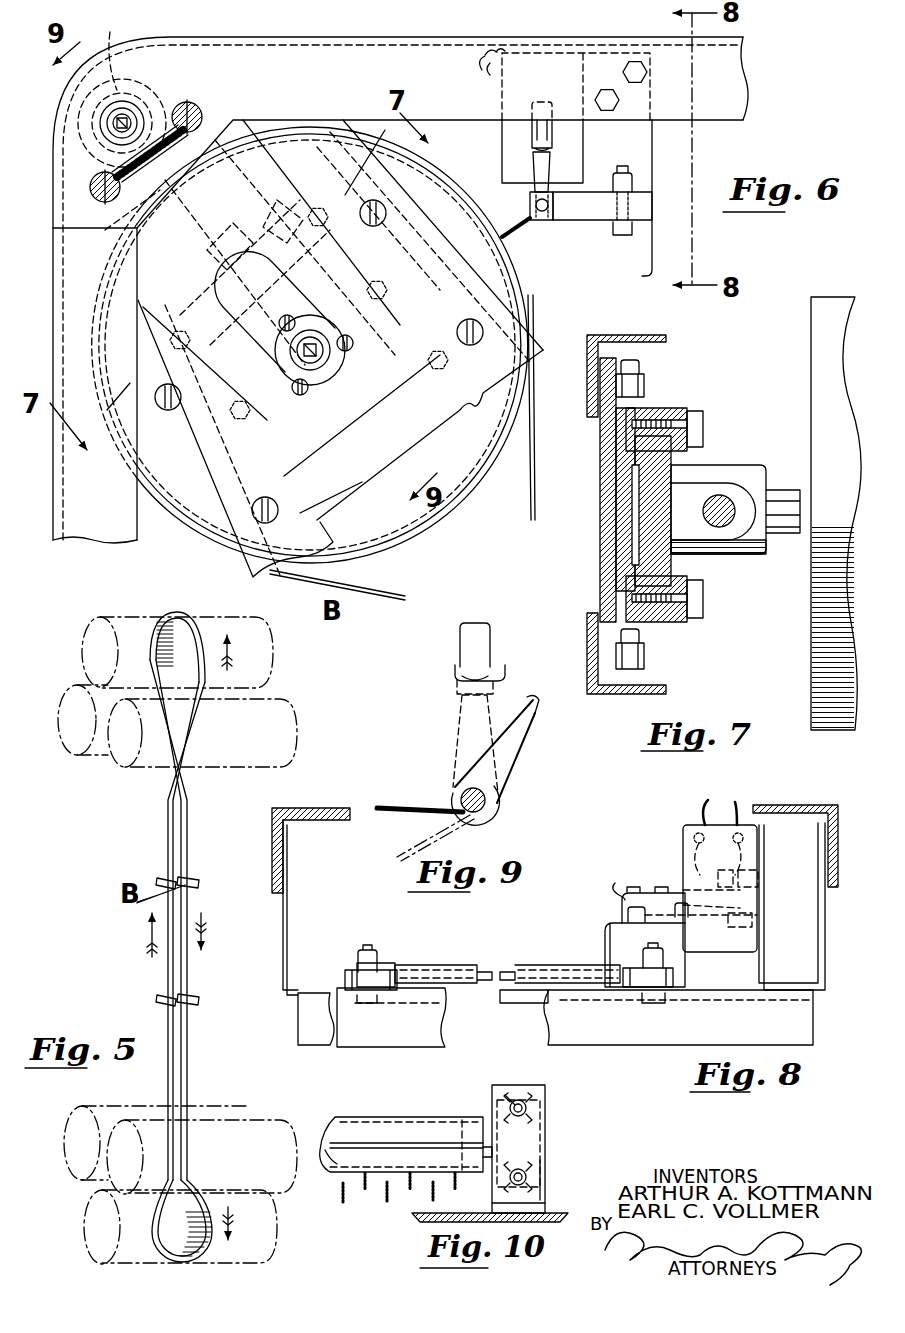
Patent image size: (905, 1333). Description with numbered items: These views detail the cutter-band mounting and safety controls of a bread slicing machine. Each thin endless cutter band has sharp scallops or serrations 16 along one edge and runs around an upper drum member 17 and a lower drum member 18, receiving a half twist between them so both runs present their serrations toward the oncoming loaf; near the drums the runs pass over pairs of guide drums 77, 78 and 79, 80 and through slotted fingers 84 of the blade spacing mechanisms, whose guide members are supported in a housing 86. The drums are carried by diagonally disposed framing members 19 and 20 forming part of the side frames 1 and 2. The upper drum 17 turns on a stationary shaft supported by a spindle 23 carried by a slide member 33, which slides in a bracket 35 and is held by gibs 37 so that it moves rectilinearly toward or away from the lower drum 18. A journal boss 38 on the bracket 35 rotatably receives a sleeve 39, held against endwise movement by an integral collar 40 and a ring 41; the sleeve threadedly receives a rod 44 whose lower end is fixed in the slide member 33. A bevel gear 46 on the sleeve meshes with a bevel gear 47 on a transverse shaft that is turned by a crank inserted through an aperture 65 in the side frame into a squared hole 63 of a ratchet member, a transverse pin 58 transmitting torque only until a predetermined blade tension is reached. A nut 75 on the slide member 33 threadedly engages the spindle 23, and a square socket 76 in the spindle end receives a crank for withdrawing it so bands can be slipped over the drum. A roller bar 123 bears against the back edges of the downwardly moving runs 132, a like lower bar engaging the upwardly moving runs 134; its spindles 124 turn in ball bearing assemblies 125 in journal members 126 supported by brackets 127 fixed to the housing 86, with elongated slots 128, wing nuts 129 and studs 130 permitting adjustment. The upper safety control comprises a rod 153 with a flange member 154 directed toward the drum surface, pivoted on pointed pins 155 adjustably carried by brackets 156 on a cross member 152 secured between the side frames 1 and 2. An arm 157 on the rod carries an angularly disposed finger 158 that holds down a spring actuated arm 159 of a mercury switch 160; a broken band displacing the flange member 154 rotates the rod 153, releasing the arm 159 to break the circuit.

In FIG. 6, the side frame 1 is at (392, 37).
In FIG. 8, the side frame 1 is at (322, 808).
In FIG. 8, the side frame 2 is at (840, 857).
In FIG. 5, the scallops or serrations 16 is at (188, 826).
In FIG. 6, the upper drum member 17 is at (410, 545).
In FIG. 7, the upper drum member 17 is at (810, 652).
In FIG. 5, the upper drum member 17 is at (133, 615).
In FIG. 5, the lower drum member 18 is at (90, 1252).
In FIG. 6, the framing member 19 is at (213, 527).
In FIG. 7, the framing member 19 is at (603, 695).
In FIG. 6, the framing member 20 is at (495, 284).
In FIG. 7, the framing member 20 is at (623, 335).
In FIG. 6, the spindle 23 is at (340, 372).
In FIG. 7, the spindle 23 is at (785, 535).
In FIG. 6, the slide member 33 is at (415, 430).
In FIG. 7, the slide member 33 is at (742, 469).
In FIG. 6, the bracket 35 is at (360, 487).
In FIG. 7, the bracket 35 is at (609, 561).
In FIG. 6, the gibs 37 is at (473, 397).
In FIG. 7, the gibs 37 is at (704, 436).
In FIG. 6, the journal boss 38 is at (227, 160).
In FIG. 6, the sleeve 39 is at (268, 284).
In FIG. 6, the integral collar 40 is at (127, 217).
In FIG. 6, the ring 41 is at (250, 187).
In FIG. 7, the rod 44 is at (704, 508).
In FIG. 6, the bevel gear 46 is at (190, 100).
In FIG. 6, the bevel gear 47 is at (116, 49).
In FIG. 6, the transverse pin 58 is at (80, 143).
In FIG. 6, the squared hole 63 is at (117, 110).
In FIG. 6, the aperture 65 is at (107, 119).
In FIG. 6, the nut 75 is at (350, 393).
In FIG. 6, the square socket 76 is at (345, 383).
In FIG. 5, the guide drum 77 is at (60, 691).
In FIG. 5, the guide drum 78 is at (117, 771).
In FIG. 5, the guide drum 79 is at (233, 1107).
In FIG. 5, the guide drum 80 is at (273, 1120).
In FIG. 5, the slotted finger 84 is at (157, 880).
In FIG. 10, the housing 86 is at (553, 1213).
In FIG. 10, the roller bar 123 is at (377, 1115).
In FIG. 10, the spindle 124 is at (493, 1127).
In FIG. 10, the ball bearing assembly 125 is at (547, 1140).
In FIG. 10, the journal member 126 is at (543, 1093).
In FIG. 10, the bracket 127 is at (547, 1168).
In FIG. 10, the elongated slot 128 is at (517, 1097).
In FIG. 10, the wing nut 129 is at (507, 1093).
In FIG. 10, the stud 130 is at (530, 1108).
In FIG. 10, the downwardly moving runs 132 is at (367, 1190).
In FIG. 10, the upwardly moving runs 134 is at (340, 1197).
In FIG. 6, the cross member 152 is at (643, 268).
In FIG. 8, the cross member 152 is at (607, 1045).
In FIG. 9, the rod 153 is at (487, 802).
In FIG. 8, the rod 153 is at (487, 965).
In FIG. 6, the flange member 154 is at (507, 233).
In FIG. 9, the flange member 154 is at (405, 808).
In FIG. 8, the flange member 154 is at (520, 995).
In FIG. 6, the pointed pin 155 is at (552, 221).
In FIG. 8, the pointed pin 155 is at (392, 965).
In FIG. 6, the bracket 156 is at (580, 220).
In FIG. 8, the bracket 156 is at (356, 962).
In FIG. 6, the arm 157 is at (533, 170).
In FIG. 9, the arm 157 is at (477, 757).
In FIG. 8, the arm 157 is at (605, 930).
In FIG. 9, the finger 158 is at (510, 700).
In FIG. 8, the finger 158 is at (614, 890).
In FIG. 6, the spring actuated arm 159 is at (533, 133).
In FIG. 9, the spring actuated arm 159 is at (463, 650).
In FIG. 8, the spring actuated arm 159 is at (615, 897).
In FIG. 6, the switch 160 is at (536, 55).
In FIG. 8, the switch 160 is at (760, 877).